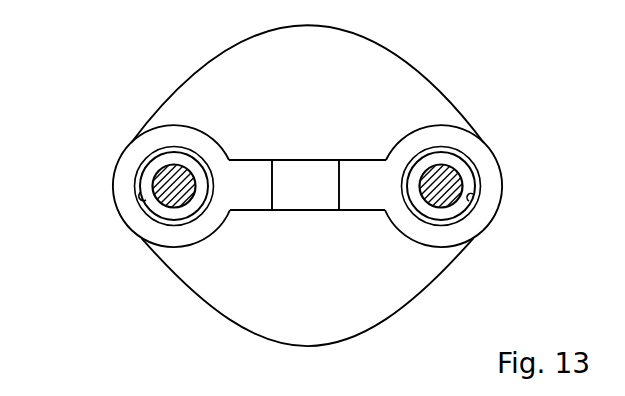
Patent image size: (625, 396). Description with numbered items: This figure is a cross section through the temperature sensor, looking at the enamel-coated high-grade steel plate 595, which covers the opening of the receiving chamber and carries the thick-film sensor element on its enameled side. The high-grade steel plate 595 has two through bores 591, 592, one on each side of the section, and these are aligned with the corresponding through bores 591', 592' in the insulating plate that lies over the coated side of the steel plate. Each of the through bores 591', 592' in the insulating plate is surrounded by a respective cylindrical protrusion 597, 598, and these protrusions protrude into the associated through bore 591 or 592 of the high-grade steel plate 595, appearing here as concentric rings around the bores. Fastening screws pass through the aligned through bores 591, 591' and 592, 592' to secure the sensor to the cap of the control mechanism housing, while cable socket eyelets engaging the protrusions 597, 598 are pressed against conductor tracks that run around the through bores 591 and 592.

The high-grade steel plate 595 is at (392, 80).
The cylindrical protrusion 598 is at (140, 175).
The cylindrical protrusion 597 is at (466, 162).
The through bore 591 is at (127, 217).
The through bore 591' is at (86, 215).
The through bore 592 is at (486, 212).
The through bore 592' is at (530, 196).